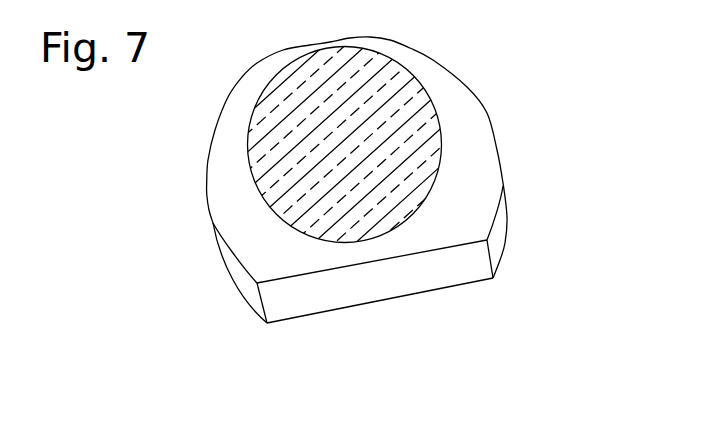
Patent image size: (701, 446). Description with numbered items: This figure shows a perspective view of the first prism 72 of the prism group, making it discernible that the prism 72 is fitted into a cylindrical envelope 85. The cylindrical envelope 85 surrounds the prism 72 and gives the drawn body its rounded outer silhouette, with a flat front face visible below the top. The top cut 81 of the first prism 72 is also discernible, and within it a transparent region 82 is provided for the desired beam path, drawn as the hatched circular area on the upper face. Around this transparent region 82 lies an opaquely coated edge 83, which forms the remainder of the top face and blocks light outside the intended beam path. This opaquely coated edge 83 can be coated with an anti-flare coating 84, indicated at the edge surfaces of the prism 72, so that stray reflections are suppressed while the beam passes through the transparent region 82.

The first prism 72 is at (531, 162).
The top cut 81 is at (447, 278).
The transparent region 82 is at (453, 91).
The opaquely coated edge 83 is at (477, 213).
The anti-flare coating 84 is at (494, 245).
The cylindrical envelope 85 is at (240, 276).